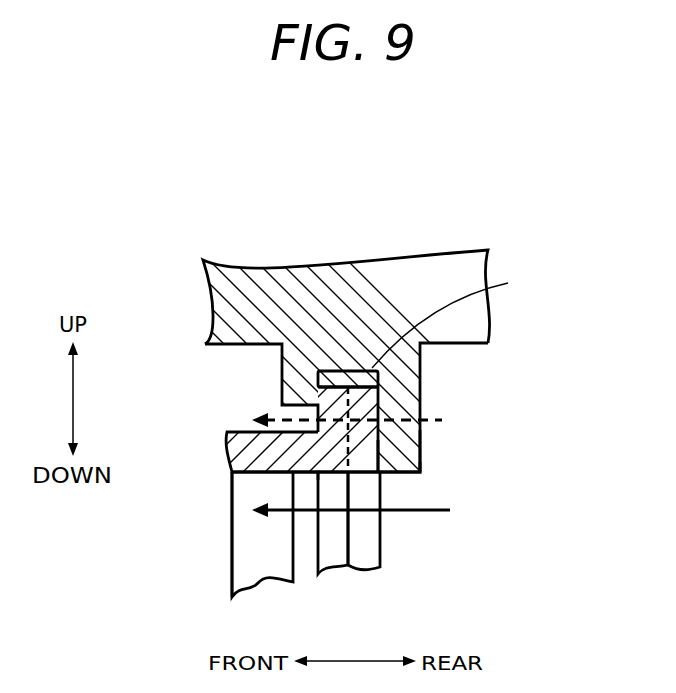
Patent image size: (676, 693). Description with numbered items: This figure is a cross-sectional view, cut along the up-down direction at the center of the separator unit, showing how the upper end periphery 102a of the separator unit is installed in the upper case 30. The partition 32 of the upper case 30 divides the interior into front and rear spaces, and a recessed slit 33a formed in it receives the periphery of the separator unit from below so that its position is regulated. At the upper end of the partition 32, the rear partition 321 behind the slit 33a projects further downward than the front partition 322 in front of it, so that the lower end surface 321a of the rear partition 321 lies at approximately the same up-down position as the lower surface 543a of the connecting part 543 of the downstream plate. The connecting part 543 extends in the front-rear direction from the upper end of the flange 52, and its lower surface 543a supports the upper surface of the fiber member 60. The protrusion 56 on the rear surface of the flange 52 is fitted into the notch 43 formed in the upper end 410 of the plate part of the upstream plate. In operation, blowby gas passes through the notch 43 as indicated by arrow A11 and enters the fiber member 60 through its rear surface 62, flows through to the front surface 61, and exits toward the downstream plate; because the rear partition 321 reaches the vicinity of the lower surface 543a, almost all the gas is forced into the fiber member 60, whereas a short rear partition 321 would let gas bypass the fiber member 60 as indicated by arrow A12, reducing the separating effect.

The upper case 30 is at (473, 345).
The upper end of the plate part 410 is at (508, 283).
The partition 32 is at (423, 373).
The front partition 322 is at (282, 388).
The slit 33a is at (330, 371).
The upper end periphery of the separator unit 102a is at (357, 387).
The flange 52 is at (347, 443).
The rear partition 321 is at (420, 458).
The lower end surface of the rear partition 321a is at (407, 473).
The connecting part 543 is at (242, 453).
The lower surface of the connecting part 543a is at (267, 477).
The protrusion 56 is at (365, 473).
The arrow A11 is at (346, 522).
The arrow A12 is at (337, 409).
The fiber member 60 is at (260, 578).
The front surface 61 is at (232, 548).
The rear surface 62 is at (298, 562).
The notch 43 is at (367, 530).